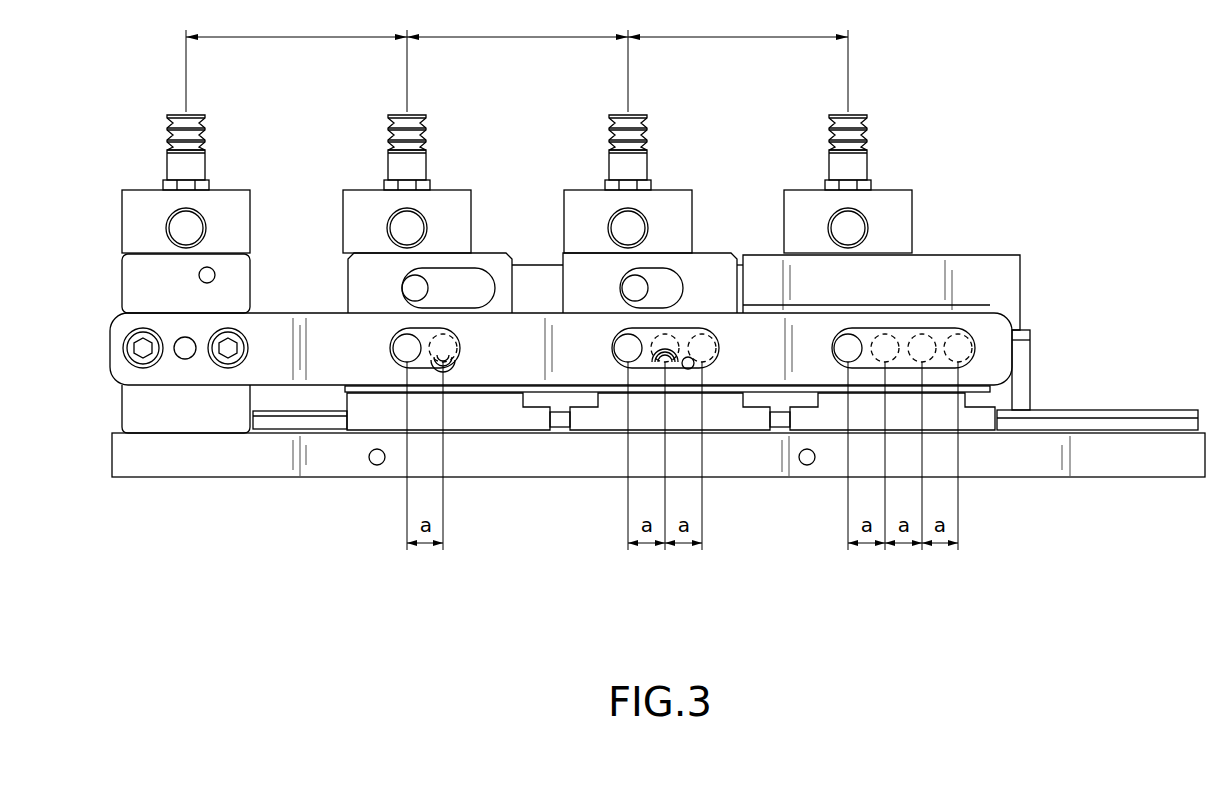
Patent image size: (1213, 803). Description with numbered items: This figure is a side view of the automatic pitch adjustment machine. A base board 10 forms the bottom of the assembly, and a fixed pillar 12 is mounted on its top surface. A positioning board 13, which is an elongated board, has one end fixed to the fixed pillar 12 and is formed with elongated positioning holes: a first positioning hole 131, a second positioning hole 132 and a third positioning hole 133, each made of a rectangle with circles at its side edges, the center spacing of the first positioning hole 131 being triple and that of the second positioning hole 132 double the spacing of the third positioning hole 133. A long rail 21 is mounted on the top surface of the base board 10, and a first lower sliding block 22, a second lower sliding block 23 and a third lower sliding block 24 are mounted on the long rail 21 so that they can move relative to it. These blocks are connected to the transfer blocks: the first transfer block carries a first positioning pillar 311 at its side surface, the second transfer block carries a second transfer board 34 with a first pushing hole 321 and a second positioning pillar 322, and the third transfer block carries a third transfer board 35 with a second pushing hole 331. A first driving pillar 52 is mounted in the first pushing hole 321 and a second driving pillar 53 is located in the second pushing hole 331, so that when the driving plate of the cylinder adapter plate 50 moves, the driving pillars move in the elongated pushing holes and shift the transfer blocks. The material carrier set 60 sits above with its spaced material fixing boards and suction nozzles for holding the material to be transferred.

The base board 10 is at (1133, 468).
The fixed pillar 12 is at (143, 410).
The positioning board 13 is at (600, 400).
The first positioning hole 131 is at (940, 333).
The second positioning hole 132 is at (642, 368).
The third positioning hole 133 is at (425, 366).
The long rail 21 is at (1160, 420).
The first lower sliding block 22 is at (842, 424).
The second lower sliding block 23 is at (656, 424).
The third lower sliding block 24 is at (460, 424).
The first positioning pillar 311 is at (846, 356).
The first pushing hole 321 is at (648, 270).
The second positioning pillar 322 is at (403, 356).
The second pushing hole 331 is at (452, 270).
The second transfer board 34 is at (651, 223).
The third transfer board 35 is at (420, 226).
The cylinder adapter plate 50 is at (985, 265).
The first driving pillar 52 is at (637, 288).
The second driving pillar 53 is at (408, 290).
The material carrier set 60 is at (915, 158).